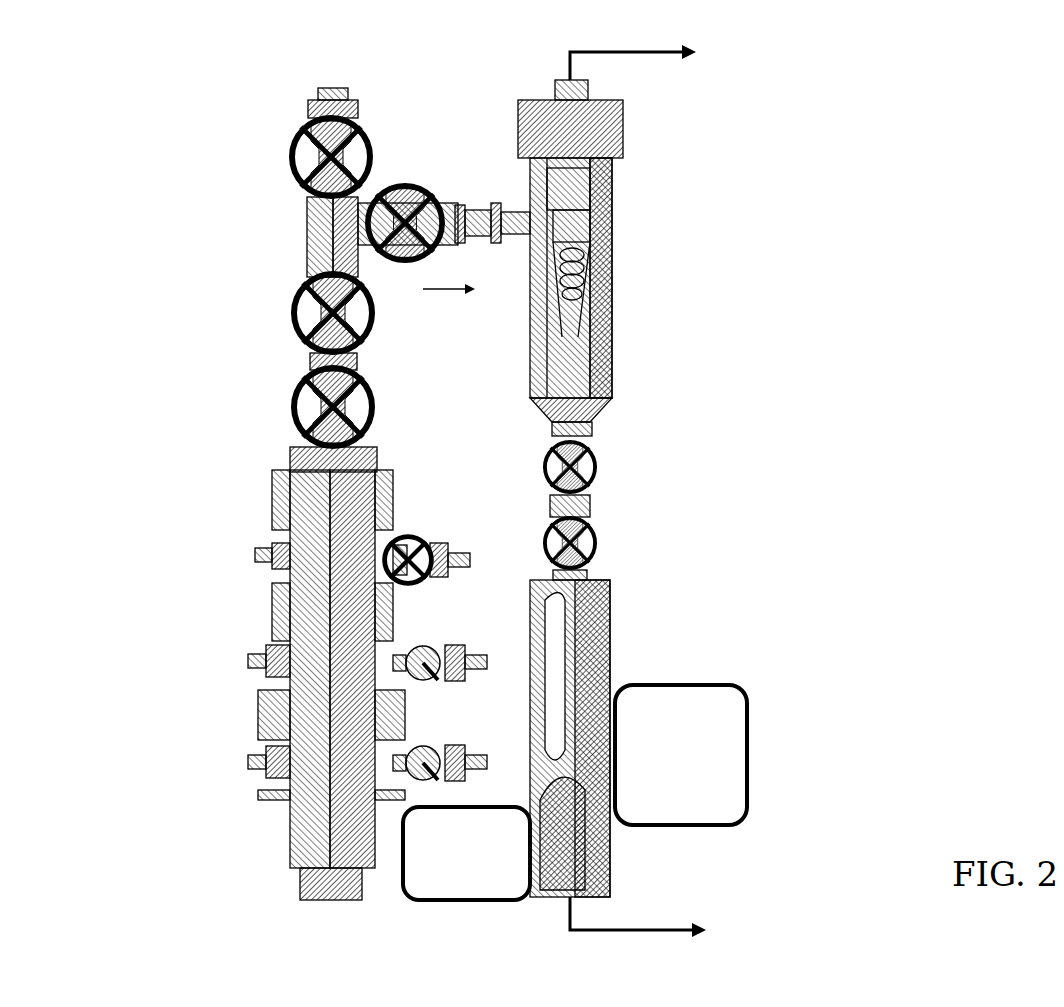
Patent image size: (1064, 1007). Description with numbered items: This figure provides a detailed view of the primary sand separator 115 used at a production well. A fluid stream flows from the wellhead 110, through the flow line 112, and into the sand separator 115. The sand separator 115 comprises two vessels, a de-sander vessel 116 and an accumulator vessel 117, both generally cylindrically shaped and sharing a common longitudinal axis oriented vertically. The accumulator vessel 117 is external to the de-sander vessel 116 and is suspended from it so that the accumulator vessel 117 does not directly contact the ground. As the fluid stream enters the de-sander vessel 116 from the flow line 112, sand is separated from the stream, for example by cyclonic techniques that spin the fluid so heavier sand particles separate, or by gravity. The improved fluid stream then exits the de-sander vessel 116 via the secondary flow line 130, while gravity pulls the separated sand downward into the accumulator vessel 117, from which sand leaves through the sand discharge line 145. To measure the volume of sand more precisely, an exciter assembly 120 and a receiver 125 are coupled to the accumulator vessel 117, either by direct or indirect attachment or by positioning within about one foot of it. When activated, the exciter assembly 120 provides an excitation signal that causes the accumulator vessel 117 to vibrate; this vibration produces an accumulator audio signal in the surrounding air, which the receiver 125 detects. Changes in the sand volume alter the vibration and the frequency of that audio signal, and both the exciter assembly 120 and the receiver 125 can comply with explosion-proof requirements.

The wellhead 110 is at (226, 198).
The flow line 112 is at (446, 140).
The primary sand separator 115 is at (817, 194).
The de-sander vessel 116 is at (633, 258).
The accumulator vessel 117 is at (641, 721).
The exciter assembly 120 is at (664, 752).
The receiver 125 is at (449, 872).
The secondary flow line 130 is at (693, 74).
The sand discharge line 145 is at (697, 904).